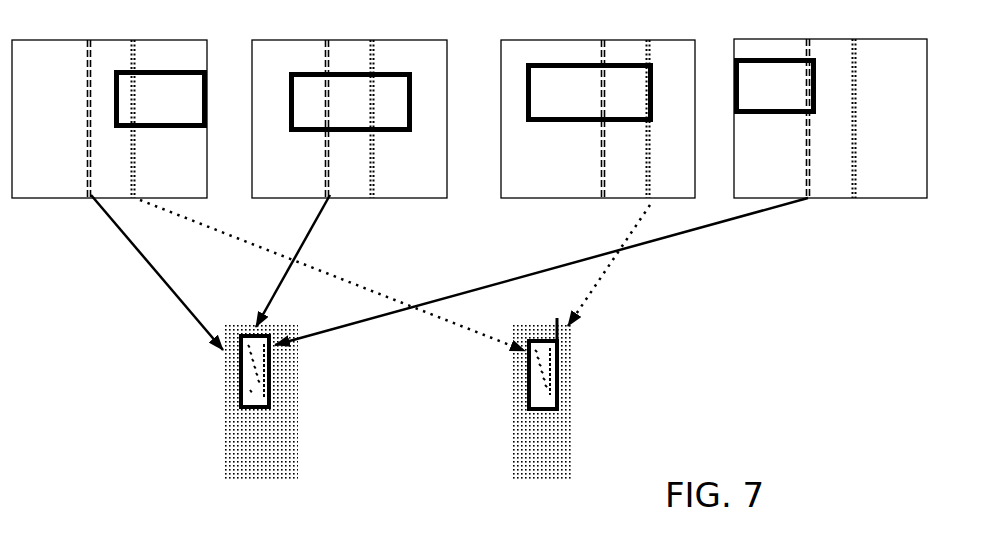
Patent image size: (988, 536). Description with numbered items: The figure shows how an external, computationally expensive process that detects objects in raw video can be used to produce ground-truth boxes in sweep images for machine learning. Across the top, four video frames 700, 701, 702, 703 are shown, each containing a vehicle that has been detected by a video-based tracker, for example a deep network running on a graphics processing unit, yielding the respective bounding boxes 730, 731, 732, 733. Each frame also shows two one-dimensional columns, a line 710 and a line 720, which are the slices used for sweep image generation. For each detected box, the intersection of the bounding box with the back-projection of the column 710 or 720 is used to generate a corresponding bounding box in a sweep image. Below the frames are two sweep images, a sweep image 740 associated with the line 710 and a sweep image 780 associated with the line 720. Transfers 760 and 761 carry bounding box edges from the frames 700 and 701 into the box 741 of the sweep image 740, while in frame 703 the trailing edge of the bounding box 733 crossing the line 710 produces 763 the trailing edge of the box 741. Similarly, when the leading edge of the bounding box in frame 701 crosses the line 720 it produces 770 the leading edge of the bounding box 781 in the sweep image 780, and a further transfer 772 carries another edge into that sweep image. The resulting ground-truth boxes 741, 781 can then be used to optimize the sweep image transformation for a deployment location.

The video frame 700 is at (109, 106).
The video frame 701 is at (349, 106).
The video frame 702 is at (598, 106).
The video frame 703 is at (830, 106).
The column line 710 is at (69, 119).
The column line 720 is at (155, 119).
The bounding box 730 is at (171, 86).
The bounding box 731 is at (353, 91).
The bounding box 732 is at (584, 79).
The bounding box 733 is at (791, 75).
The sweep image 740 is at (261, 419).
The bounding box in sweep image 741 is at (294, 373).
The transfer of bounding box edge to sweep image 760 is at (157, 272).
The transfer of bounding box edge to sweep image 761 is at (285, 261).
The production of trailing edge 763 is at (541, 272).
The production of leading edge 770 is at (332, 275).
The transfer of bounding box edge to sweep image 772 is at (628, 265).
The sweep image 780 is at (542, 419).
The bounding box in sweep image 781 is at (575, 366).